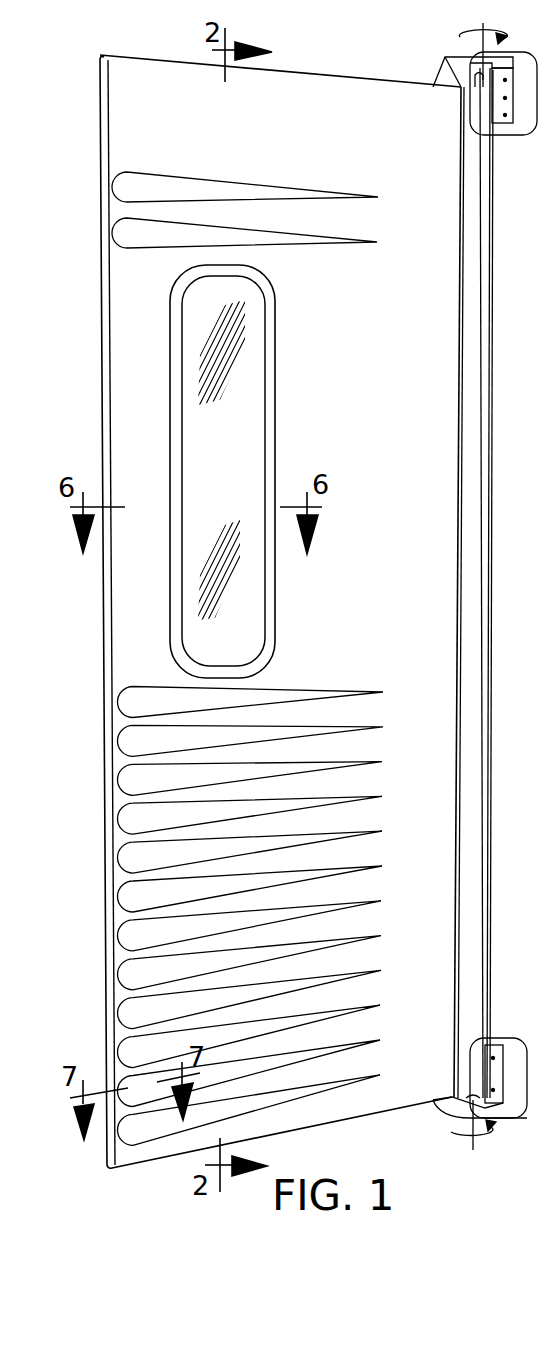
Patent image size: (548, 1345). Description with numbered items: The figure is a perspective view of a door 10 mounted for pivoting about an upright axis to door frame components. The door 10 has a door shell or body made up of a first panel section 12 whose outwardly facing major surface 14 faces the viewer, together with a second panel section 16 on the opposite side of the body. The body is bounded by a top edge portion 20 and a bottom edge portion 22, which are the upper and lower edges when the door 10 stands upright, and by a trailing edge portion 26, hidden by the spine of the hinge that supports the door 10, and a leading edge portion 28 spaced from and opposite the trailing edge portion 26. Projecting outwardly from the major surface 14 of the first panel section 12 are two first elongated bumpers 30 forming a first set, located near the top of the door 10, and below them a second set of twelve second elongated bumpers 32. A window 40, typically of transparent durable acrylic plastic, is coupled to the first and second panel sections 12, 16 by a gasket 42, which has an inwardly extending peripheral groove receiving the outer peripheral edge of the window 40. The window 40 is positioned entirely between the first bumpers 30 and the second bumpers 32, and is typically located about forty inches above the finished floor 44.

The door 10 is at (545, 482).
The first panel section 12 is at (135, 627).
The outwardly facing major surface 14 is at (352, 612).
The second panel section 16 is at (88, 395).
The top edge portion 20 is at (336, 66).
The bottom edge portion 22 is at (388, 1130).
The trailing edge portion 26 is at (503, 396).
The leading edge portion 28 is at (88, 577).
The first elongated bumpers 30 is at (172, 230).
The second elongated bumpers 32 is at (136, 743).
The window 40 is at (245, 375).
The gasket 42 is at (268, 408).
The finished floor 44 is at (503, 1113).